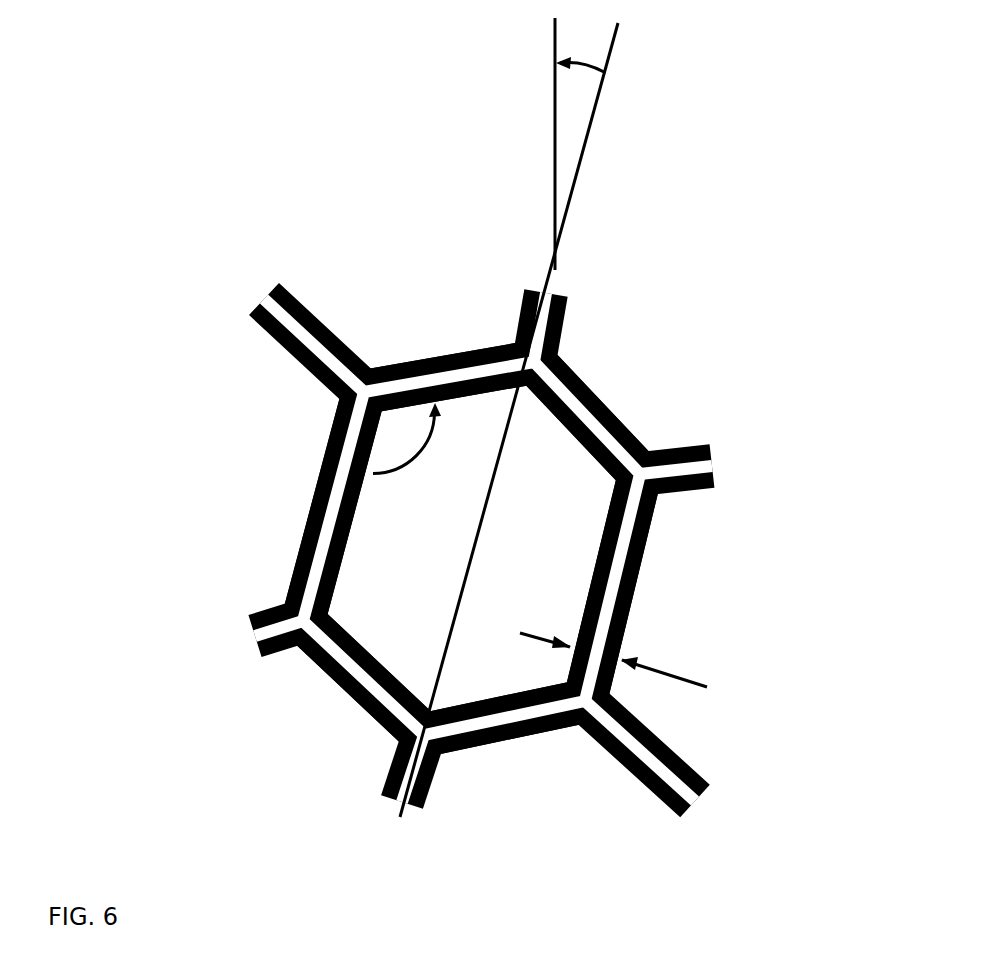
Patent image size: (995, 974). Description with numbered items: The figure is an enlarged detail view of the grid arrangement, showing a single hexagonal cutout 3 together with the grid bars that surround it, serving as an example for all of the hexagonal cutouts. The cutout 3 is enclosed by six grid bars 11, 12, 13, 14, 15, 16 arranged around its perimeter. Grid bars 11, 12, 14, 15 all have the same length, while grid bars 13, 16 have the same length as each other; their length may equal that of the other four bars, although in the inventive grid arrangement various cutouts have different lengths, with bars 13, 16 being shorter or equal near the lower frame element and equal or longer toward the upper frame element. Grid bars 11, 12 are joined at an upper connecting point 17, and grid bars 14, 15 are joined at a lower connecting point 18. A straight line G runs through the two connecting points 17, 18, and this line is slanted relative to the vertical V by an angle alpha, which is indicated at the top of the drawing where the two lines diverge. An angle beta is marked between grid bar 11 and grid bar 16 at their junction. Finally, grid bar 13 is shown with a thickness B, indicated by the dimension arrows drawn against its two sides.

The cutout 3 is at (529, 591).
The grid bar 11 is at (421, 388).
The grid bar 12 is at (590, 421).
The grid bar 13 is at (640, 585).
The grid bar 14 is at (508, 714).
The grid bar 15 is at (370, 675).
The grid bar 16 is at (316, 498).
The upper connecting point 17 is at (549, 360).
The lower connecting point 18 is at (437, 738).
The vertical V is at (555, 103).
The straight line G is at (597, 110).
The thickness B is at (613, 657).